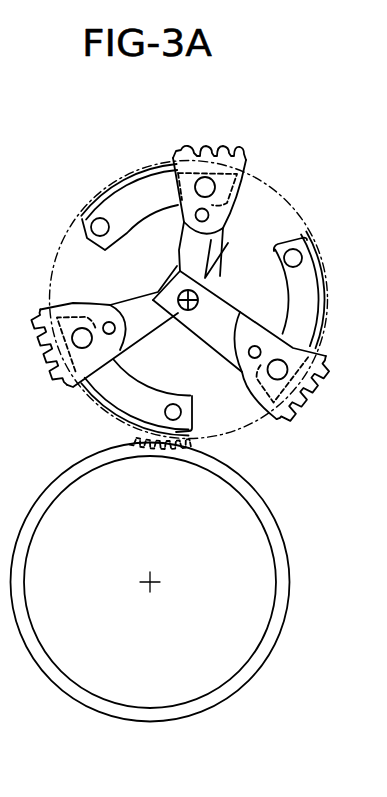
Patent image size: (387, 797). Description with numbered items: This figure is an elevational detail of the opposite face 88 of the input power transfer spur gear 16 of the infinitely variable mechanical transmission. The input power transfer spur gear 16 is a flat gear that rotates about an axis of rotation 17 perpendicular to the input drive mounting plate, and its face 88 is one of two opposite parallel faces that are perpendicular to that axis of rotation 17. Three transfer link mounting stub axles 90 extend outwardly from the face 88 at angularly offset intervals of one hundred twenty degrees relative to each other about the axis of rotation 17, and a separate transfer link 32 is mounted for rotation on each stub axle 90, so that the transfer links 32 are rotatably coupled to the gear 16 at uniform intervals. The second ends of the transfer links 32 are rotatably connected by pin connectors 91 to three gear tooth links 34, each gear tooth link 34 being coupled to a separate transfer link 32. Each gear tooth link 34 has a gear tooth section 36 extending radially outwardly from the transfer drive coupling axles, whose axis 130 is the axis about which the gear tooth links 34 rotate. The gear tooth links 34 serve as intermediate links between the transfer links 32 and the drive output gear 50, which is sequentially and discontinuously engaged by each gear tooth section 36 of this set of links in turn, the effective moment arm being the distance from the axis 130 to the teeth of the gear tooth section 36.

The input power transfer spur gear 16 is at (275, 198).
The axis of rotation 17 is at (165, 282).
The transfer links 32 is at (150, 168).
The gear tooth links 34 is at (186, 238).
The gear tooth sections 36 is at (190, 150).
The drive output gears 50 is at (282, 538).
The face of the input power transfer gear 88 is at (85, 250).
The transfer link mounting stub axles 90 is at (100, 227).
The rotatable pin connectors 91 is at (207, 188).
The axis of the stub axles 130 is at (238, 243).